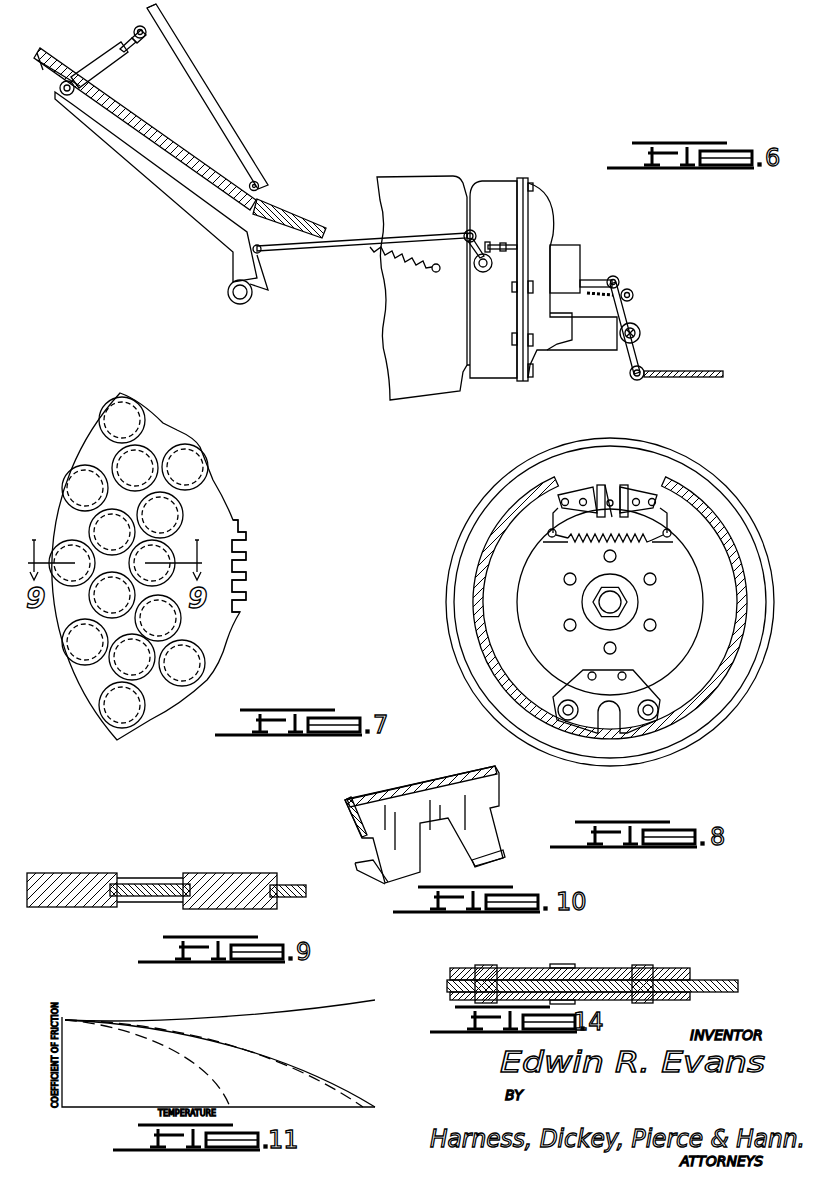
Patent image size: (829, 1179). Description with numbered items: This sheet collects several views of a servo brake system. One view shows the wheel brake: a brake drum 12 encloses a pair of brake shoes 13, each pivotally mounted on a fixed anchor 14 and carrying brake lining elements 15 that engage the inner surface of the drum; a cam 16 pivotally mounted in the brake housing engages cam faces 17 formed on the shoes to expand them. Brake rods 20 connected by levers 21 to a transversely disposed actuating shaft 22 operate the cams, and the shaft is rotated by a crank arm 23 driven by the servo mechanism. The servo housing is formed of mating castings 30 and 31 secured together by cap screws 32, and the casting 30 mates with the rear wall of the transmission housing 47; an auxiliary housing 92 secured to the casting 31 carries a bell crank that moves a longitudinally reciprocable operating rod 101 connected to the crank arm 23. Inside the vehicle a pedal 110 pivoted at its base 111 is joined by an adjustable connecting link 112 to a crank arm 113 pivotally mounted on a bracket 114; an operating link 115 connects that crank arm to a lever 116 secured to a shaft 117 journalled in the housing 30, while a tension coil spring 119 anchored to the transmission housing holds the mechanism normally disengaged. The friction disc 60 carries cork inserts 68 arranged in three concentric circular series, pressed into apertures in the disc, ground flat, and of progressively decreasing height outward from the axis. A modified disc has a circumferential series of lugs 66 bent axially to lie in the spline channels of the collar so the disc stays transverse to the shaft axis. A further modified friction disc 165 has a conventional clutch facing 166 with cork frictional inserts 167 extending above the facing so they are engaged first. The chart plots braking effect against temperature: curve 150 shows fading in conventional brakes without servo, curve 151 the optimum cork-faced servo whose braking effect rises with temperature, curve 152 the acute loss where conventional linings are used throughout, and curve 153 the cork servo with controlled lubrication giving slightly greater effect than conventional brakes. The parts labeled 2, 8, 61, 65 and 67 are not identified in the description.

In FIG. 8, the brake drum 2 is at (657, 473).
In FIG. 8, the return spring 8 is at (573, 543).
In FIG. 8, the brake drum 12 is at (590, 477).
In FIG. 8, the brake shoes 13 is at (697, 527).
In FIG. 8, the anchor 14 is at (630, 723).
In FIG. 8, the brake lining elements 15 is at (743, 608).
In FIG. 8, the cam 16 is at (607, 477).
In FIG. 8, the cam faces 17 is at (627, 477).
In FIG. 6, the brake rods 20 is at (663, 370).
In FIG. 6, the levers 21 is at (634, 302).
In FIG. 6, the actuating shaft 22 is at (640, 333).
In FIG. 6, the crank arm 23 is at (618, 281).
In FIG. 6, the housing casting 30 is at (498, 182).
In FIG. 6, the housing casting 31 is at (538, 204).
In FIG. 6, the cap screws 32 is at (530, 182).
In FIG. 6, the transmission housing 47 is at (427, 180).
In FIG. 7, the friction disc 60 is at (212, 500).
In FIG. 9, the friction disc 60 is at (285, 885).
In FIG. 7, the serrated edge 61 is at (238, 560).
In FIG. 10, the friction block 65 is at (492, 794).
In FIG. 10, the lugs 66 is at (362, 866).
In FIG. 10, the flange 67 is at (490, 846).
In FIG. 7, the cork inserts 68 is at (130, 427).
In FIG. 9, the cork inserts 68 is at (58, 873).
In FIG. 6, the auxiliary housing 92 is at (540, 267).
In FIG. 6, the operating rod 101 is at (587, 280).
In FIG. 6, the pedal 110 is at (204, 94).
In FIG. 6, the base 111 is at (265, 186).
In FIG. 6, the connecting link 112 is at (104, 54).
In FIG. 6, the crank arm 113 is at (183, 207).
In FIG. 6, the bracket 114 is at (257, 295).
In FIG. 6, the operating link 115 is at (318, 255).
In FIG. 6, the lever 116 is at (488, 222).
In FIG. 6, the shaft 117 is at (480, 271).
In FIG. 6, the tension coil spring 119 is at (407, 272).
In FIG. 11, the curve 150 is at (317, 1063).
In FIG. 11, the curve 151 is at (293, 1013).
In FIG. 11, the curve 152 is at (217, 1078).
In FIG. 11, the curve 153 is at (317, 1062).
In FIG. 14, the friction disc 165 is at (715, 980).
In FIG. 14, the clutch facing 166 is at (663, 970).
In FIG. 14, the frictional inserts 167 is at (493, 965).